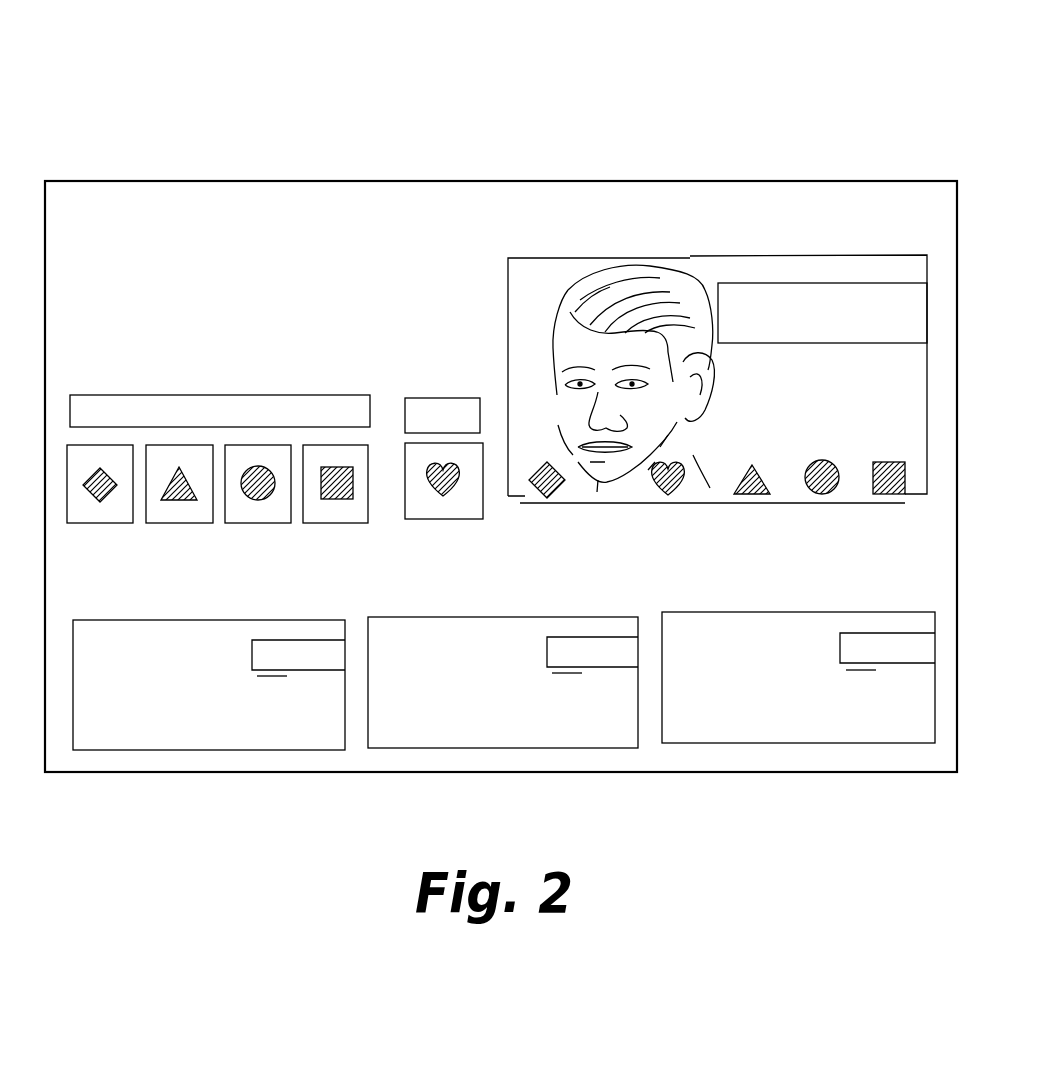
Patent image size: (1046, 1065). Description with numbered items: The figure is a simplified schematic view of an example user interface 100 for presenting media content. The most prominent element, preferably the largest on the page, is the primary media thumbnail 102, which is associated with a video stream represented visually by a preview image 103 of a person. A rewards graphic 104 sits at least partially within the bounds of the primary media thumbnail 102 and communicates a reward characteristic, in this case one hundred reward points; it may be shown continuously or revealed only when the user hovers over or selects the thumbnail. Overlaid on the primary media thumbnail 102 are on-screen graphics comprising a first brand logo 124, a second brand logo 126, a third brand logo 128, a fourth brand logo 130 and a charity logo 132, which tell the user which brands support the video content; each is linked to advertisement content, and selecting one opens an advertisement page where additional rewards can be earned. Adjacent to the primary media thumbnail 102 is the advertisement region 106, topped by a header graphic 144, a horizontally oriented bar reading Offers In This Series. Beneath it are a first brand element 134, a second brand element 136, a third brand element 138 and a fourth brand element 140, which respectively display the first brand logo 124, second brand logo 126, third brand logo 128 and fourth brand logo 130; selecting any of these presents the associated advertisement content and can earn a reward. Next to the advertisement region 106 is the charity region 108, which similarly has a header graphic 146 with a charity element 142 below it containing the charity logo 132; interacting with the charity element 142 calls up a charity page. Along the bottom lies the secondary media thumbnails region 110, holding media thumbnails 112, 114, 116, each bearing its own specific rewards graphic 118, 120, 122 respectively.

The user interface 100 is at (603, 133).
The primary media thumbnail 102 is at (702, 256).
The preview image 103 is at (603, 288).
The rewards graphic 104 is at (835, 360).
The advertisement region 106 is at (202, 370).
The charity region 108 is at (452, 384).
The secondary media thumbnails region 110 is at (410, 602).
The media thumbnail 112 is at (143, 620).
The media thumbnail 114 is at (515, 617).
The media thumbnail 116 is at (880, 612).
The rewards graphic 118 is at (280, 672).
The rewards graphic 120 is at (575, 670).
The rewards graphic 122 is at (868, 667).
The first brand logo 124 is at (538, 470).
The second brand logo 126 is at (762, 466).
The third brand logo 128 is at (812, 462).
The fourth brand logo 130 is at (889, 462).
The charity logo 132 is at (672, 460).
The first brand element 134 is at (91, 523).
The second brand element 136 is at (190, 523).
The third brand element 138 is at (252, 523).
The fourth brand element 140 is at (316, 523).
The charity element 142 is at (452, 519).
The header graphic 144 is at (133, 395).
The header graphic 146 is at (424, 398).